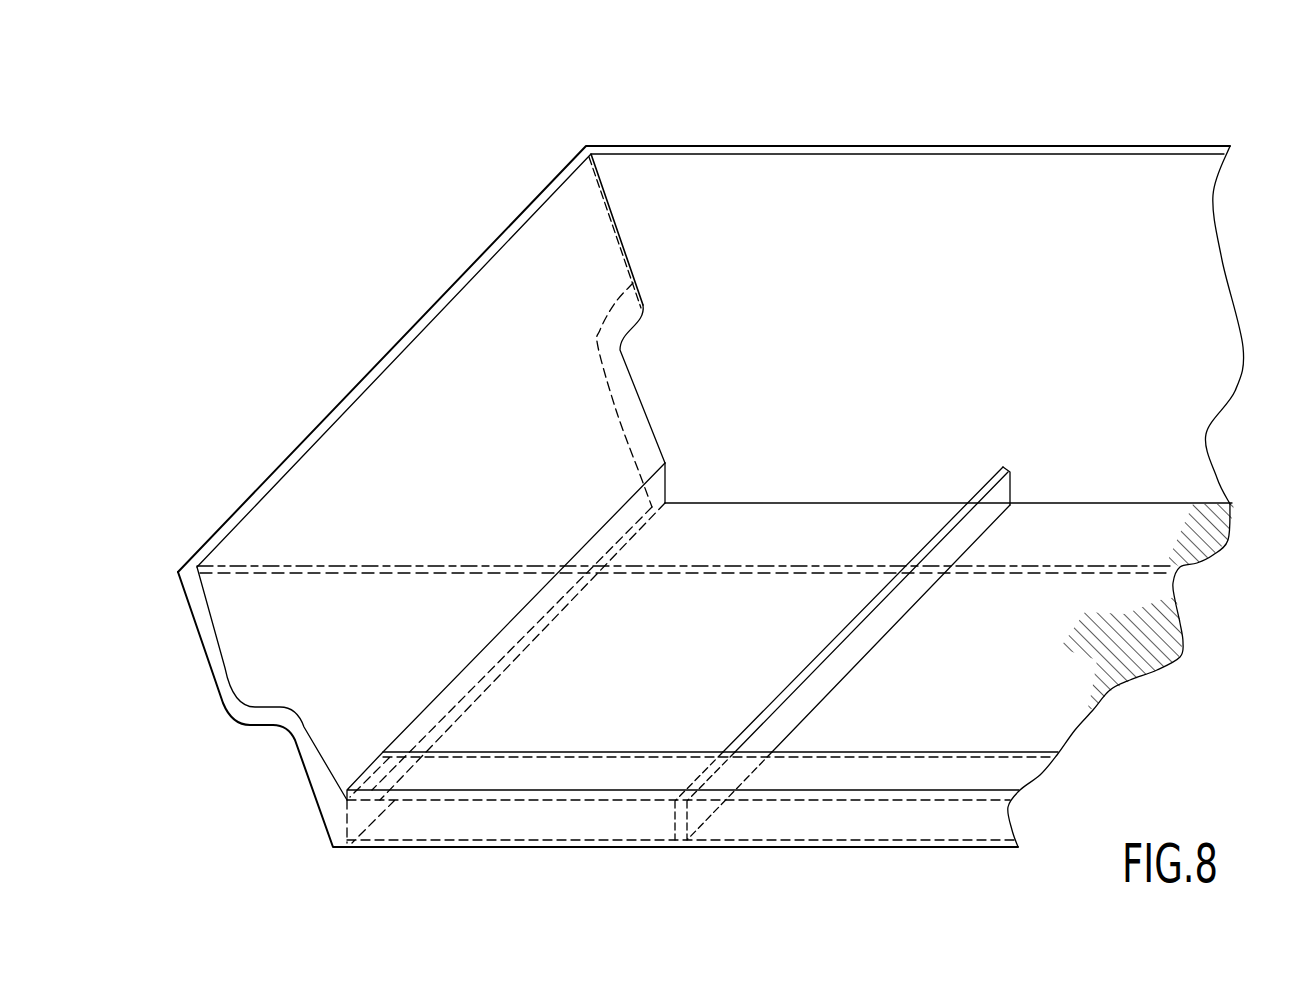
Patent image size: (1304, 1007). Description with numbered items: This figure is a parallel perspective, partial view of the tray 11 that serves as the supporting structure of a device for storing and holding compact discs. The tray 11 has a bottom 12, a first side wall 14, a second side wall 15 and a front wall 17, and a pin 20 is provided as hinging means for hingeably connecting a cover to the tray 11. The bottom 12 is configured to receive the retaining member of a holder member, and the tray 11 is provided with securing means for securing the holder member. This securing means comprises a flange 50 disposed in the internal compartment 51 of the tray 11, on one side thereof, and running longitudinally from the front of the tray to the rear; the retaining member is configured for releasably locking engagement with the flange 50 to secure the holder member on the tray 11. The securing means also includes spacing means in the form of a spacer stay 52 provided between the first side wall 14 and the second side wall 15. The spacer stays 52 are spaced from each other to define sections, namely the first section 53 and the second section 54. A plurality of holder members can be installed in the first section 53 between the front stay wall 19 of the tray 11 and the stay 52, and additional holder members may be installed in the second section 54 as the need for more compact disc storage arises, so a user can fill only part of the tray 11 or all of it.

The tray 11 is at (424, 290).
The bottom 12 is at (845, 580).
The first side wall 14 is at (437, 597).
The second side wall 15 is at (835, 155).
The front wall 17 is at (317, 433).
The front stay wall 19 is at (630, 513).
The pin 20 is at (775, 533).
The flange 50 is at (608, 758).
The internal compartment 51 is at (552, 430).
The spacer stay 52 is at (1005, 468).
The first section 53 is at (740, 642).
The second section 54 is at (998, 642).